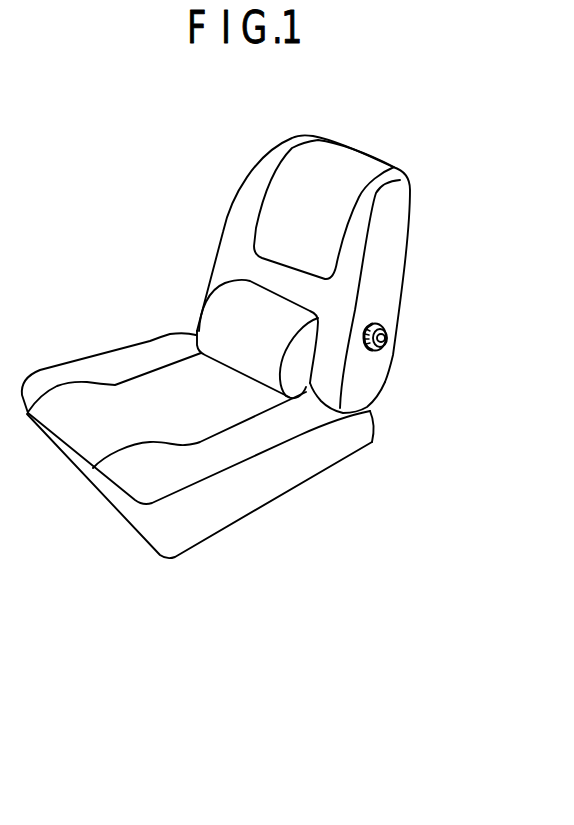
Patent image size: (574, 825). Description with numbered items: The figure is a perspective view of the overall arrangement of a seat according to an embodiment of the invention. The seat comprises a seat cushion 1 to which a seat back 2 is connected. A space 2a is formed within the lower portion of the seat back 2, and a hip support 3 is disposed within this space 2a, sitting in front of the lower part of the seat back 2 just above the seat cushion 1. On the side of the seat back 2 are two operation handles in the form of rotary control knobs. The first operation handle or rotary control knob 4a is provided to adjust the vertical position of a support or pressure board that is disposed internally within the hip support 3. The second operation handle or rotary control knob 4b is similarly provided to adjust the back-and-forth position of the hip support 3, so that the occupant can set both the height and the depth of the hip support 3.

The seat cushion 1 is at (267, 487).
The seat back 2 is at (393, 233).
The space 2a is at (305, 388).
The hip support 3 is at (237, 320).
The first operation handle or rotary control knob 4a is at (383, 338).
The second operation handle or rotary control knob 4b is at (380, 322).